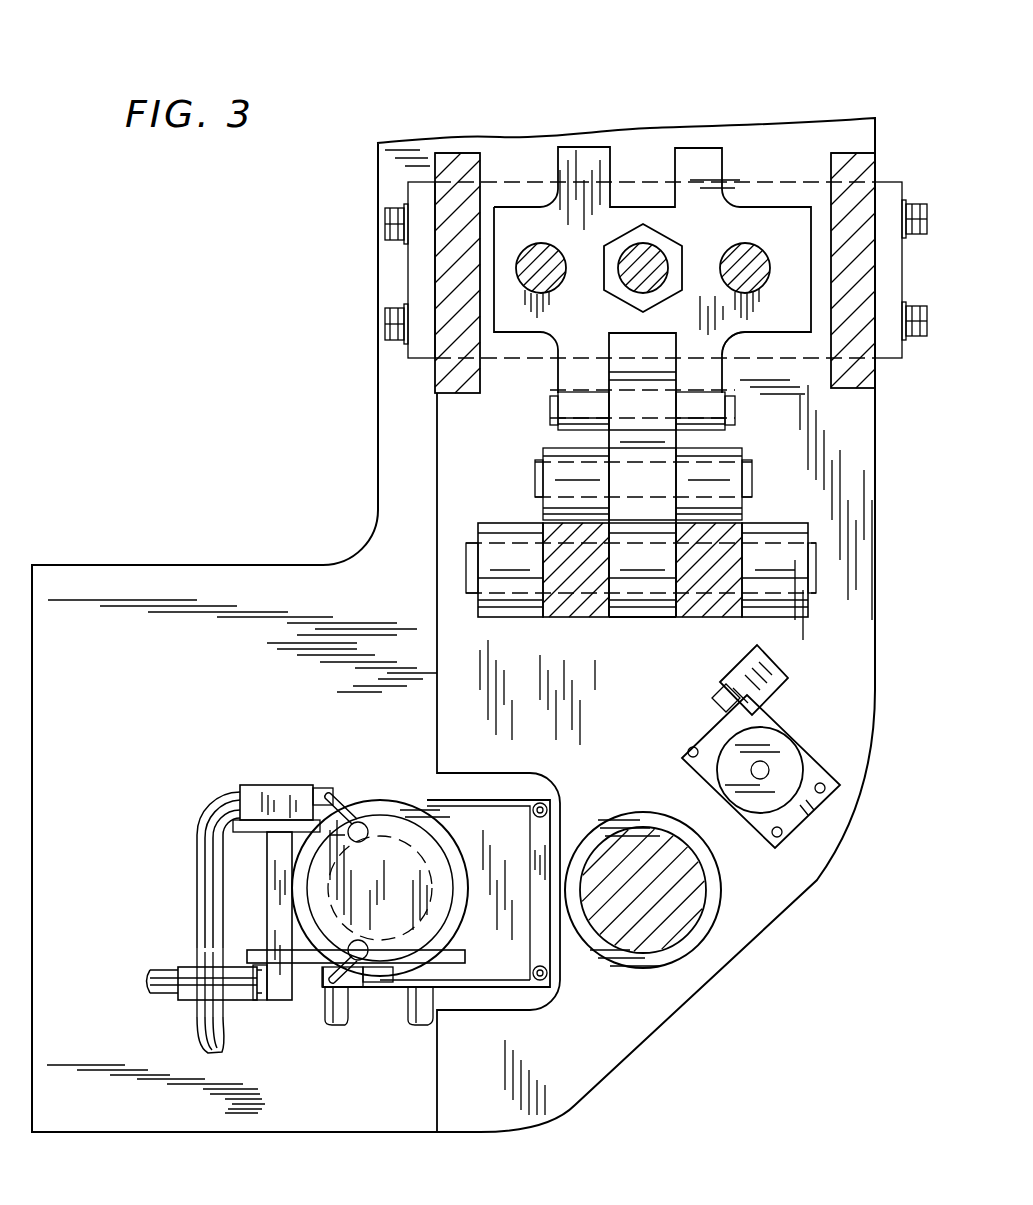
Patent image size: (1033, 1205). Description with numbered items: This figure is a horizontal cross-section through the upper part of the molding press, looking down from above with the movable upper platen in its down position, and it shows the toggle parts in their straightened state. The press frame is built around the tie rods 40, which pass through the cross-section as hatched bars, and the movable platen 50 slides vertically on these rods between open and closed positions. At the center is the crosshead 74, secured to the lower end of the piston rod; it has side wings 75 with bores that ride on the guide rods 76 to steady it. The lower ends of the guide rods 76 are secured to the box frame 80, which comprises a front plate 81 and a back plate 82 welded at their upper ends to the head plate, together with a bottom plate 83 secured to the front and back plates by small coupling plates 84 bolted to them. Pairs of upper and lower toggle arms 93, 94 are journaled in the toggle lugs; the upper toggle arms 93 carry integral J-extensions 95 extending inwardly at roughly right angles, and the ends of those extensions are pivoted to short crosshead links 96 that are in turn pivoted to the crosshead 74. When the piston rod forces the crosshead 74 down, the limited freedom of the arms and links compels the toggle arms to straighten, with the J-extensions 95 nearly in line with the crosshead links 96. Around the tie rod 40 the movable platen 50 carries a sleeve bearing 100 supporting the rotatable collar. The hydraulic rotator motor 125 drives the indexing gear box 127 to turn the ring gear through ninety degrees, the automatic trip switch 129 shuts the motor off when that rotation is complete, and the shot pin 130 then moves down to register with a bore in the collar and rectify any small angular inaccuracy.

The tie rod 40 is at (692, 904).
The movable platen 50 is at (333, 575).
The crosshead 74 is at (570, 325).
The side wings 75 is at (541, 213).
The guide rods 76 is at (563, 265).
The box frame 80 is at (878, 372).
The front plate 81 is at (440, 372).
The back plate 82 is at (860, 161).
The bottom plate 83 is at (762, 350).
The coupling plates 84 is at (415, 284).
The upper toggle arms 93 is at (583, 620).
The lower toggle arms 94 is at (493, 620).
The J-extensions 95 is at (543, 510).
The crosshead links 96 is at (657, 444).
The bearing 100 is at (668, 960).
The hydraulic rotator motor 125 is at (385, 805).
The indexing gear box 127 is at (495, 975).
The automatic trip switch 129 is at (330, 958).
The shot pin 130 is at (768, 766).